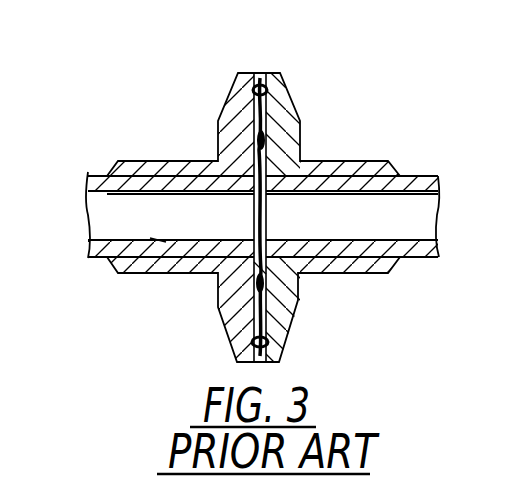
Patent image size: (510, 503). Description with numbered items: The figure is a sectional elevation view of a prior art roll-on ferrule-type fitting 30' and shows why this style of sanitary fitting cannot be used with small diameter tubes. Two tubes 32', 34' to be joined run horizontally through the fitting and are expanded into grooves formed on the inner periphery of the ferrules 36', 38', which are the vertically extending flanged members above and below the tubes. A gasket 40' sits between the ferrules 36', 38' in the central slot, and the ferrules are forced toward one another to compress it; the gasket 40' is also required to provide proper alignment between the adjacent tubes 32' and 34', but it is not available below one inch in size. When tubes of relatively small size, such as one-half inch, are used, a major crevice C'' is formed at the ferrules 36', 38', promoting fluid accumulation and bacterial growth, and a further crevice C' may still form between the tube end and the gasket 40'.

The roll-on ferrule-type fitting 30' is at (266, 199).
The tube 32' is at (143, 243).
The tube 34' is at (357, 247).
The ferrule 36' is at (180, 217).
The ferrule 38' is at (358, 217).
The gasket 40' is at (294, 186).
The crevice C' is at (103, 220).
The major crevice C'' is at (205, 295).